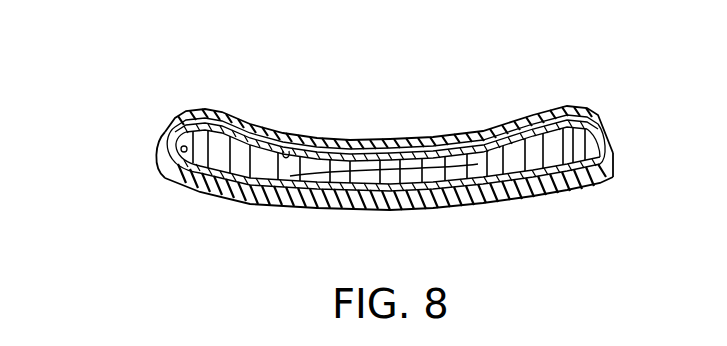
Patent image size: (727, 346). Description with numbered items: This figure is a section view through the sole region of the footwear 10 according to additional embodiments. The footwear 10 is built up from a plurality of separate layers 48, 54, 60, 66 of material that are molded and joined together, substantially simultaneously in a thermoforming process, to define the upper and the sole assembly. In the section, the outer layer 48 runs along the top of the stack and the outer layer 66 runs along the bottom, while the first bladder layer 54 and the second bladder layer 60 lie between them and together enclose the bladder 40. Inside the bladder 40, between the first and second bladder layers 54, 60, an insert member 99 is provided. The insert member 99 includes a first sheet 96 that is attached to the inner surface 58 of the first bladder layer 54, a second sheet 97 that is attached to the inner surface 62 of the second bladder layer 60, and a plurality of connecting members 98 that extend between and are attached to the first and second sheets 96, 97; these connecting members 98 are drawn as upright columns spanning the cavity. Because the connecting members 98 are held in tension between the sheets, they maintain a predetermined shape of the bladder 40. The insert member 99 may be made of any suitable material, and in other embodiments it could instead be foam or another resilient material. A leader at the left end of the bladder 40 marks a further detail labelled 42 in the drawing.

The footwear 10 is at (574, 74).
The bladder 40 is at (156, 156).
The inner loop 42 is at (183, 146).
The layer 48 is at (473, 135).
The first bladder layer 54 is at (521, 140).
The inner surface of the first bladder layer 58 is at (283, 151).
The first sheet 96 is at (348, 143).
The insert member 99 is at (398, 168).
The second sheet 97 is at (393, 182).
The connecting members 98 is at (340, 181).
The second bladder layer 60 is at (523, 187).
The inner surface of the second bladder layer 62 is at (470, 170).
The layer 66 is at (277, 205).